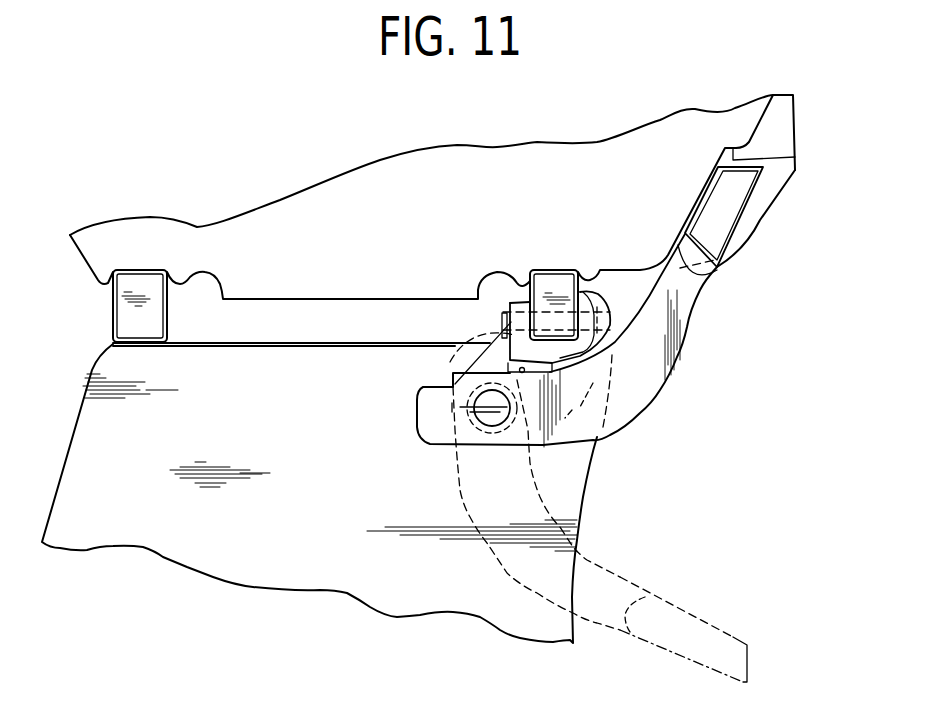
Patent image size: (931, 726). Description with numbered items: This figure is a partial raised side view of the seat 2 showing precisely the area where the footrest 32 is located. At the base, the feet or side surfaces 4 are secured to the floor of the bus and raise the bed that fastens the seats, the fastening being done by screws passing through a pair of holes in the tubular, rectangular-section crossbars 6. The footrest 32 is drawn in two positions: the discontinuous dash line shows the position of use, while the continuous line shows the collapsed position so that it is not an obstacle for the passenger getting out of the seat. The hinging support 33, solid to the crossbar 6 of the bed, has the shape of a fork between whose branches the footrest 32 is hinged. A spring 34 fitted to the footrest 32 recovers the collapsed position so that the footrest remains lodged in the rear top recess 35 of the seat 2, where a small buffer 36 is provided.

The seat 2 is at (199, 228).
The feet or side surfaces 4 is at (68, 438).
The crossbar 6 is at (127, 310).
The footrest 32 is at (655, 400).
The hinging support 33 is at (612, 322).
The spring 34 is at (493, 433).
The rear top recess 35 is at (795, 156).
The buffer 36 is at (575, 377).